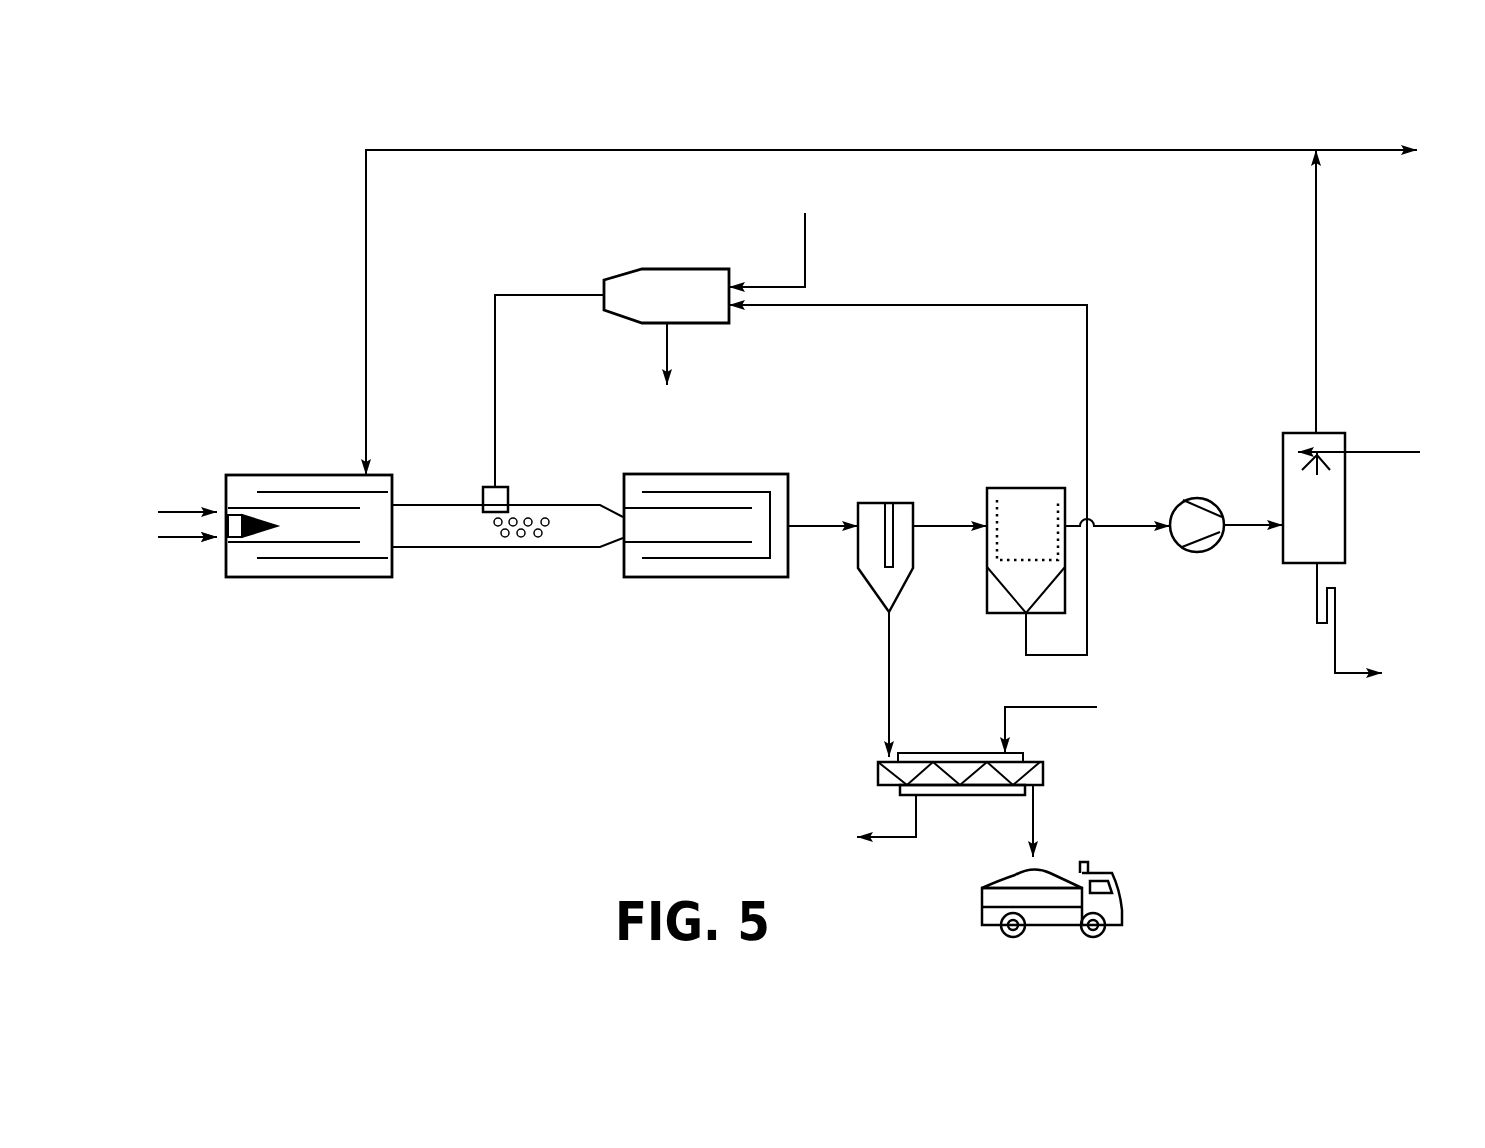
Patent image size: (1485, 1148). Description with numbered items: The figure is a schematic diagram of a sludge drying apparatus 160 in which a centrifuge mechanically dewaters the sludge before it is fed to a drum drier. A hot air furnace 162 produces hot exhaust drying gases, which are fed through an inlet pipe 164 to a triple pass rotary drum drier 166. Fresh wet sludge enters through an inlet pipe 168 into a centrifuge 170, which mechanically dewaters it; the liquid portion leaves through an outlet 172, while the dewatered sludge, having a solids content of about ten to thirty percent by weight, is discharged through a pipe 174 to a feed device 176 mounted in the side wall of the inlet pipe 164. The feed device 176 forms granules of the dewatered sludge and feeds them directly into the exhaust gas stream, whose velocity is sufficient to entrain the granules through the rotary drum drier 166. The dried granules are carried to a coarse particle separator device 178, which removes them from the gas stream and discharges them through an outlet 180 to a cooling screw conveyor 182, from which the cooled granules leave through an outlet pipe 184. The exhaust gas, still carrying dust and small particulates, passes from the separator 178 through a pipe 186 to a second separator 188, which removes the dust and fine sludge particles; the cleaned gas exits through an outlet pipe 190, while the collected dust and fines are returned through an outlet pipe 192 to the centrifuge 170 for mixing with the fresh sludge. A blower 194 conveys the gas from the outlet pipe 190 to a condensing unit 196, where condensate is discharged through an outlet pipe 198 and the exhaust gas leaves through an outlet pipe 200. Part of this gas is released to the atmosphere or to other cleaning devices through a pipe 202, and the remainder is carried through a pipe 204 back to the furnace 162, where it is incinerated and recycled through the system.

The drying apparatus 160 is at (292, 186).
The hot air furnace 162 is at (320, 577).
The inlet pipe 164 is at (488, 547).
The triple pass rotary drum drier 166 is at (715, 577).
The inlet pipe 168 is at (805, 255).
The centrifuge 170 is at (675, 275).
The outlet 172 is at (667, 343).
The pipe 174 is at (535, 295).
The feed device 176 is at (497, 497).
The coarse particle separator device 178 is at (878, 508).
The outlet 180 is at (888, 662).
The cooling screw conveyor 182 is at (1037, 777).
The outlet pipe 184 is at (1035, 808).
The pipe 186 is at (932, 515).
The second separator 188 is at (1027, 503).
The outlet pipe 190 is at (1120, 525).
The outlet pipe 192 is at (1087, 625).
The blower 194 is at (1198, 497).
The condensing unit 196 is at (1330, 500).
The outlet pipe 198 is at (1340, 638).
The outlet pipe 200 is at (1317, 298).
The pipe 202 is at (1338, 149).
The pipe 204 is at (860, 149).